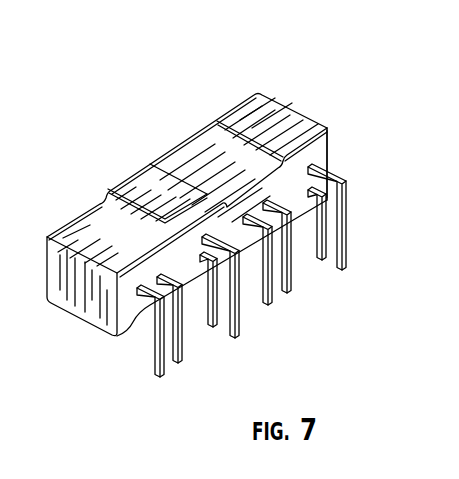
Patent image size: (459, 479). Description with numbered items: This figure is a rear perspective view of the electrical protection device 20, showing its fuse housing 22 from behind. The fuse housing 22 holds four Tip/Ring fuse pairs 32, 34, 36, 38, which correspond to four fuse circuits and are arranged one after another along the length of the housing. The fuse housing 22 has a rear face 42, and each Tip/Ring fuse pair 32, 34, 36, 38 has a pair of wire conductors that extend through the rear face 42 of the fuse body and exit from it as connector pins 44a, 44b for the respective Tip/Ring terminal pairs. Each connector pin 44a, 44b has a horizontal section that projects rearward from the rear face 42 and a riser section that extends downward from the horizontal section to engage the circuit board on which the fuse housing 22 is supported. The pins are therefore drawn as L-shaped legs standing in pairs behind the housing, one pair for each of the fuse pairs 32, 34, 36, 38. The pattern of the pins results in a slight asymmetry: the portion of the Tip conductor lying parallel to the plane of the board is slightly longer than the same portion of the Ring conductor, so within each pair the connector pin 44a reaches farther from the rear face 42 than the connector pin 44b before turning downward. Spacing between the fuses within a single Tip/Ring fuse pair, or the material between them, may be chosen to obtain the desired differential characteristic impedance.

The electrical protection device 20 is at (262, 74).
The fuse housing 22 is at (282, 115).
The Tip/Ring fuse pair 32 is at (242, 100).
The Tip/Ring fuse pair 34 is at (192, 138).
The Tip/Ring fuse pair 36 is at (132, 170).
The Tip/Ring fuse pair 38 is at (80, 213).
The rear face 42 is at (322, 147).
The connector pin 44a is at (187, 364).
The connector pin 44b is at (155, 350).